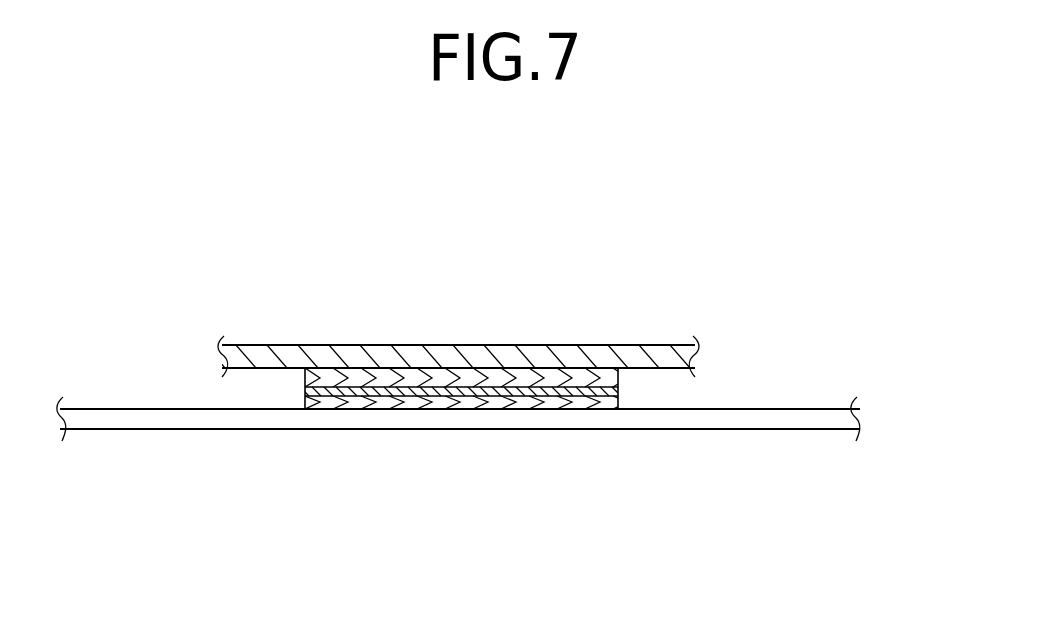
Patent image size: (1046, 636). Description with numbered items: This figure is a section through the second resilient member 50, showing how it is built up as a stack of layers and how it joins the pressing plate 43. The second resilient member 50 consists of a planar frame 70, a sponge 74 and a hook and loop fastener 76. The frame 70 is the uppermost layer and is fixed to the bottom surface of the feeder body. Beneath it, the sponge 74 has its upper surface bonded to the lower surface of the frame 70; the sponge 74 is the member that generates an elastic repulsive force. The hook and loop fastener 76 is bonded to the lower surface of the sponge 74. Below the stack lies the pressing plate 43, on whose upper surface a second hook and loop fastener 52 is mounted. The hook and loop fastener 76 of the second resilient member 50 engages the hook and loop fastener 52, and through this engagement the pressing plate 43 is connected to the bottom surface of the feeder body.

The second resilient member 50 is at (551, 366).
The planar frame 70 is at (534, 352).
The sponge 74 is at (385, 373).
The hook and loop fastener 76 is at (308, 392).
The second hook and loop fastener 52 is at (457, 407).
The pressing plate 43 is at (745, 430).